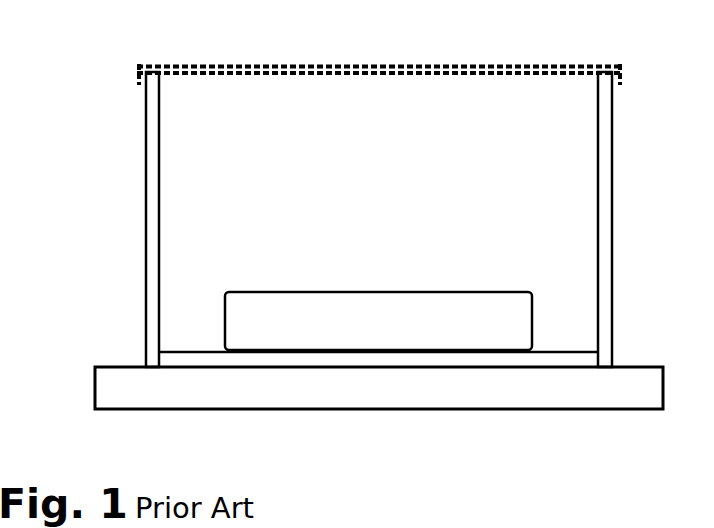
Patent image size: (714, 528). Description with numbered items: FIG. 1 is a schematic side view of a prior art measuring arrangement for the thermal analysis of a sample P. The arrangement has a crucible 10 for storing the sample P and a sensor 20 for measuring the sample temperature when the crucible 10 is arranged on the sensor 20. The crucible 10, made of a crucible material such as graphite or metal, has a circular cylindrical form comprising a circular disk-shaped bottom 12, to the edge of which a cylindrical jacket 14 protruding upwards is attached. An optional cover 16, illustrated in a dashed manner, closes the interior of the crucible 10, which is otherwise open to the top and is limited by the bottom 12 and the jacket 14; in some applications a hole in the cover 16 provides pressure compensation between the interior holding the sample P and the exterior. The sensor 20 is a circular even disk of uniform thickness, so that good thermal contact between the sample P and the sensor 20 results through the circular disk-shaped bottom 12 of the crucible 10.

The crucible 10 is at (349, 194).
The bottom 12 is at (167, 358).
The jacket 14 is at (153, 242).
The cover 16 is at (289, 67).
The sensor 20 is at (76, 368).
The sample P is at (371, 276).